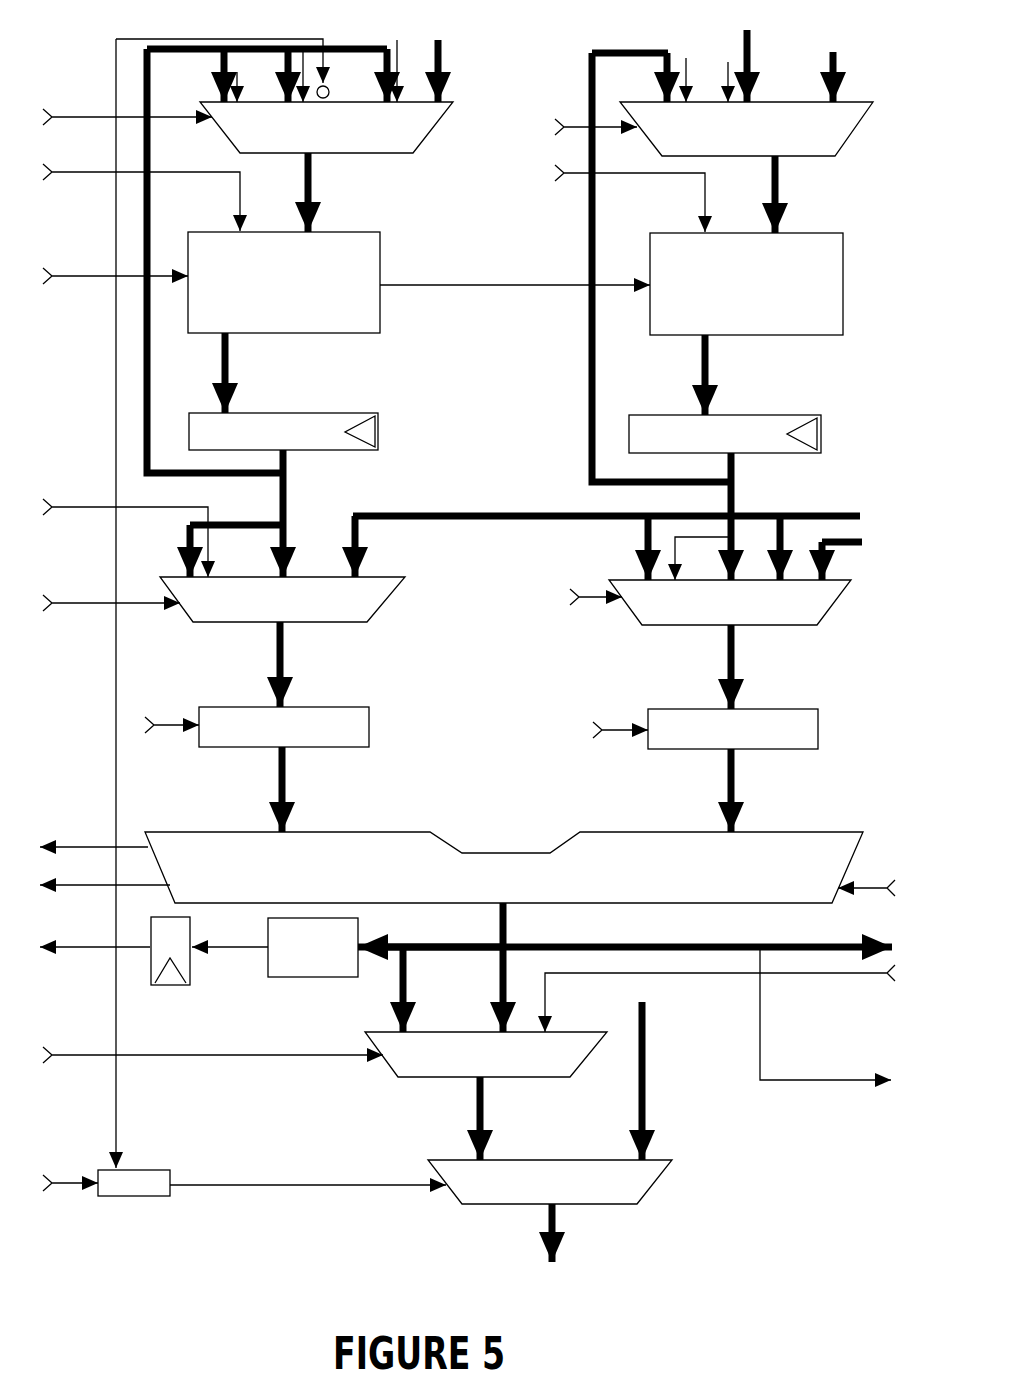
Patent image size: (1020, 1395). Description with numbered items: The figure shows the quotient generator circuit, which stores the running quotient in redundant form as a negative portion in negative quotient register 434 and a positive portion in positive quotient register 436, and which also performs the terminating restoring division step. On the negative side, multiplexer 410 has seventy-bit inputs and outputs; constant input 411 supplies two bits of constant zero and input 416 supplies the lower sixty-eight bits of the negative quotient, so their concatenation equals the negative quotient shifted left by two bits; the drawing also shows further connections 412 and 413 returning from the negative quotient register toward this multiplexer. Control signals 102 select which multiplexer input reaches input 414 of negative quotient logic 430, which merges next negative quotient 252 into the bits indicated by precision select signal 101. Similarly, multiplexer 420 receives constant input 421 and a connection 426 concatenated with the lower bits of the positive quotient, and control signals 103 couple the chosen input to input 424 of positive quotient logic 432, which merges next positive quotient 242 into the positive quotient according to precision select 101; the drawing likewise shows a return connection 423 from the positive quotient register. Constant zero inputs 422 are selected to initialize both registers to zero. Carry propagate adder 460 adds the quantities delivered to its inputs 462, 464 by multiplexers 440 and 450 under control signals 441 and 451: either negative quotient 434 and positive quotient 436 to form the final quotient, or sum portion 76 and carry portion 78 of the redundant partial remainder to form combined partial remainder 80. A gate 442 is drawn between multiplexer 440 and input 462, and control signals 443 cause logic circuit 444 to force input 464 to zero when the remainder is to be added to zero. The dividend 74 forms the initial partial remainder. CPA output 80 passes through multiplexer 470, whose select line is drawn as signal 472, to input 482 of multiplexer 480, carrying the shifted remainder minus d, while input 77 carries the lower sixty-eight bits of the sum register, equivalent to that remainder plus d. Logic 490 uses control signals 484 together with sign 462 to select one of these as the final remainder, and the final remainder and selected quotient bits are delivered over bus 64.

The bus 64 is at (565, 1223).
The dividend 74 is at (752, 55).
The sum portion 76 is at (817, 510).
The input 77 is at (652, 1040).
The carry portion 78 is at (855, 540).
The combined partial remainder 80 is at (592, 931).
The precision select signal 101 is at (85, 268).
The control signals 102 is at (85, 112).
The control signals 103 is at (577, 120).
The next positive quotient 242 is at (579, 177).
The next negative quotient 252 is at (85, 166).
The multiplexer 410 is at (445, 124).
The constant input 411 is at (246, 91).
The Qneg feedback bus 412 is at (405, 66).
The feedback bus 413 is at (150, 372).
The input 414 is at (315, 180).
The input 416 is at (212, 67).
The multiplexer 420 is at (855, 135).
The constant input 421 is at (691, 81).
The constant zero inputs 422 is at (450, 66).
The feedback bus 423 is at (598, 375).
The input 424 is at (783, 181).
The multiplexer input bus 426 is at (643, 43).
The negative quotient logic 430 is at (385, 317).
The positive quotient logic 432 is at (850, 286).
The negative quotient register 434 is at (388, 431).
The positive quotient register 436 is at (828, 435).
The multiplexer 440 is at (395, 602).
The control signals 441 is at (85, 592).
The XOR gate 442 is at (375, 727).
The control signals 443 is at (618, 712).
The logic circuit 444 is at (826, 731).
The multiplexer 450 is at (848, 605).
The control signals 451 is at (593, 588).
The carry propagate adder 460 is at (862, 852).
The CPA input / sign 462 is at (292, 785).
The CPA input 464 is at (740, 787).
The multiplexer 470 is at (588, 1070).
The multiplexer select signal 472 is at (231, 1045).
The multiplexer 480 is at (658, 1190).
The input 482 is at (488, 1105).
The control signals 484 is at (66, 1166).
The logic 490 is at (175, 1176).